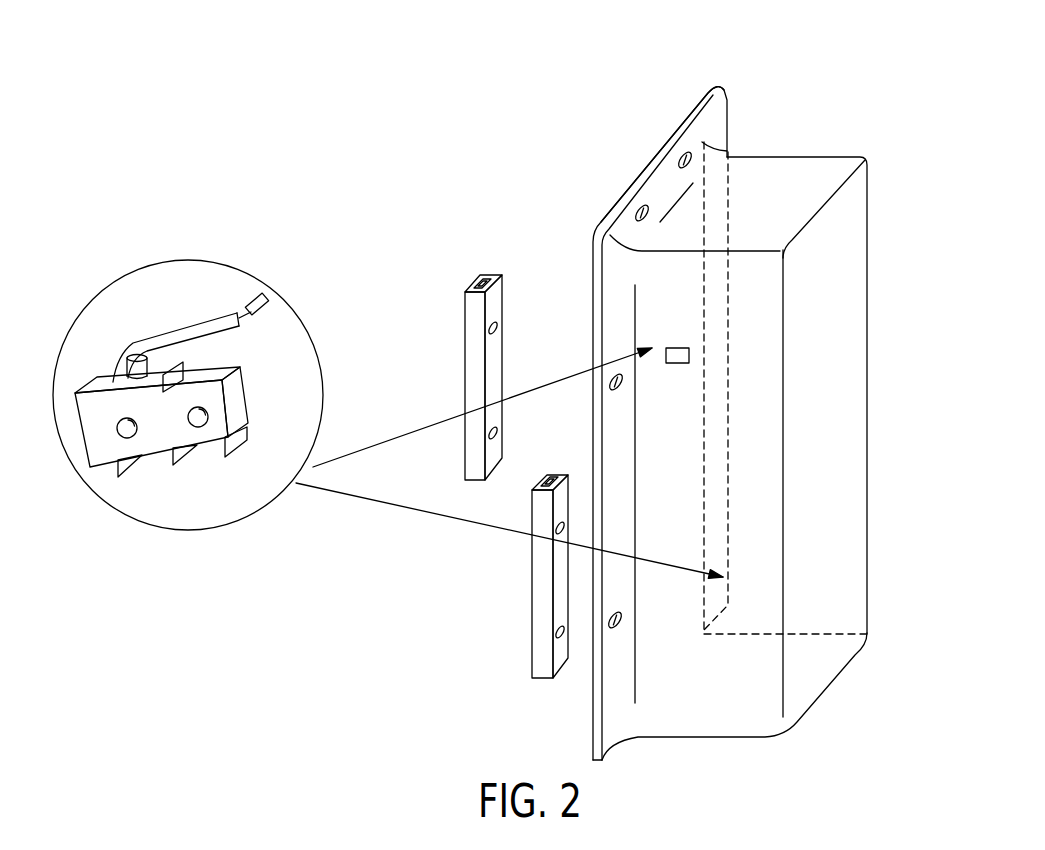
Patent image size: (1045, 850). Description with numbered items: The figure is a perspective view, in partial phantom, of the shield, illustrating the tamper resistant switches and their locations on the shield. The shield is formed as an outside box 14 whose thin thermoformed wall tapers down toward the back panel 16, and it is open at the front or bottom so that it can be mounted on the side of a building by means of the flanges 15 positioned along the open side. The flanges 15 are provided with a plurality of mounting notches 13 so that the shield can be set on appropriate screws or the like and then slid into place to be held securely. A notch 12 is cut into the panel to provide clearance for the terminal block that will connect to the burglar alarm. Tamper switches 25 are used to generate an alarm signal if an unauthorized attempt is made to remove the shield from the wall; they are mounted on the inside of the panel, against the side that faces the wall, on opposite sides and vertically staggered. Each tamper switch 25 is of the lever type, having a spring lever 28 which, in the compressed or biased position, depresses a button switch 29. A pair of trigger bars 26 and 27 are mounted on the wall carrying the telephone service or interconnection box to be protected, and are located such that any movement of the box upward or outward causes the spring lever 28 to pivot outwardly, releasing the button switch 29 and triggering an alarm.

The notch 12 is at (678, 363).
The mounting notches 13 is at (684, 157).
The outside box 14 is at (777, 168).
The flanges 15 is at (722, 85).
The back panel 16 is at (853, 478).
The tamper switches 25 is at (188, 364).
The trigger bar 26 is at (473, 283).
The trigger bar 27 is at (532, 567).
The spring lever 28 is at (263, 295).
The button switch 29 is at (148, 363).